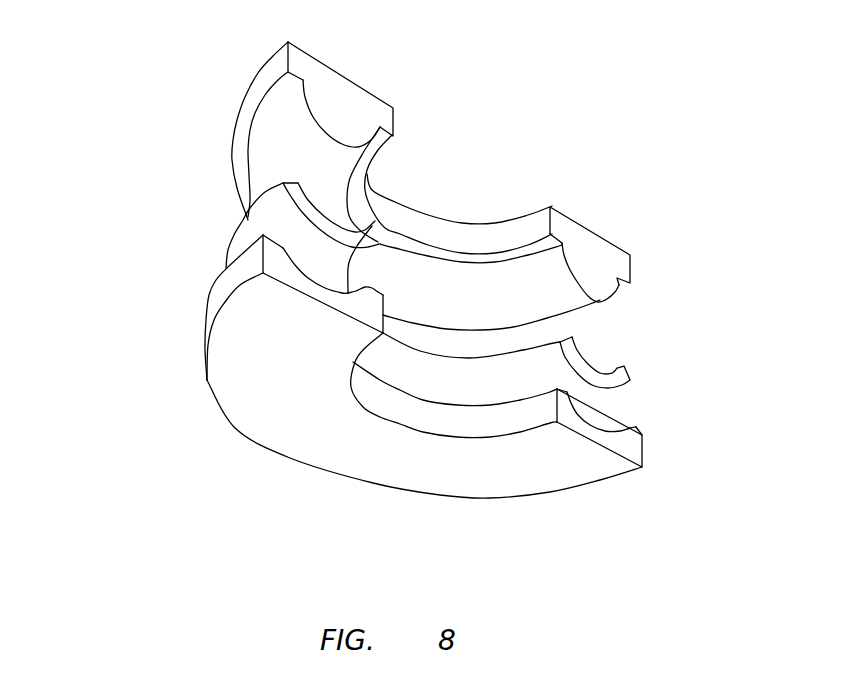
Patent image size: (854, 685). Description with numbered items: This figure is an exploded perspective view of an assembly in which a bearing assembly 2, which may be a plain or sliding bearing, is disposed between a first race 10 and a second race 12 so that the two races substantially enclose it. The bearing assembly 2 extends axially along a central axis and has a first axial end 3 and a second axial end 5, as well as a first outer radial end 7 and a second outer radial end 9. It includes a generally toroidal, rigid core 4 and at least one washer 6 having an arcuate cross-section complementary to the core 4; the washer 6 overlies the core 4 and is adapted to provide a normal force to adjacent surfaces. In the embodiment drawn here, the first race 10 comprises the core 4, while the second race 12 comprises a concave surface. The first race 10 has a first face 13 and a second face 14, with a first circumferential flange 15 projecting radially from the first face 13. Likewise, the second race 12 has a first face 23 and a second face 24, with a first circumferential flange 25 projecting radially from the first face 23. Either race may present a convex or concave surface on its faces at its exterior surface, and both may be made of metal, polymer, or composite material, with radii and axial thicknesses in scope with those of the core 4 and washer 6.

The bearing assembly 2 is at (130, 470).
The first axial end 3 is at (268, 430).
The core 4 is at (242, 140).
The second axial end 5 is at (350, 74).
The washer 6 is at (233, 238).
The first outer radial end 7 is at (630, 284).
The second outer radial end 9 is at (262, 63).
The first race 10 is at (265, 117).
The second race 12 is at (220, 298).
The first face 13 is at (593, 303).
The second face 14 is at (600, 236).
The first circumferential flange 15 is at (550, 230).
The first face 23 is at (603, 422).
The second face 24 is at (463, 490).
The first circumferential flange 25 is at (645, 433).